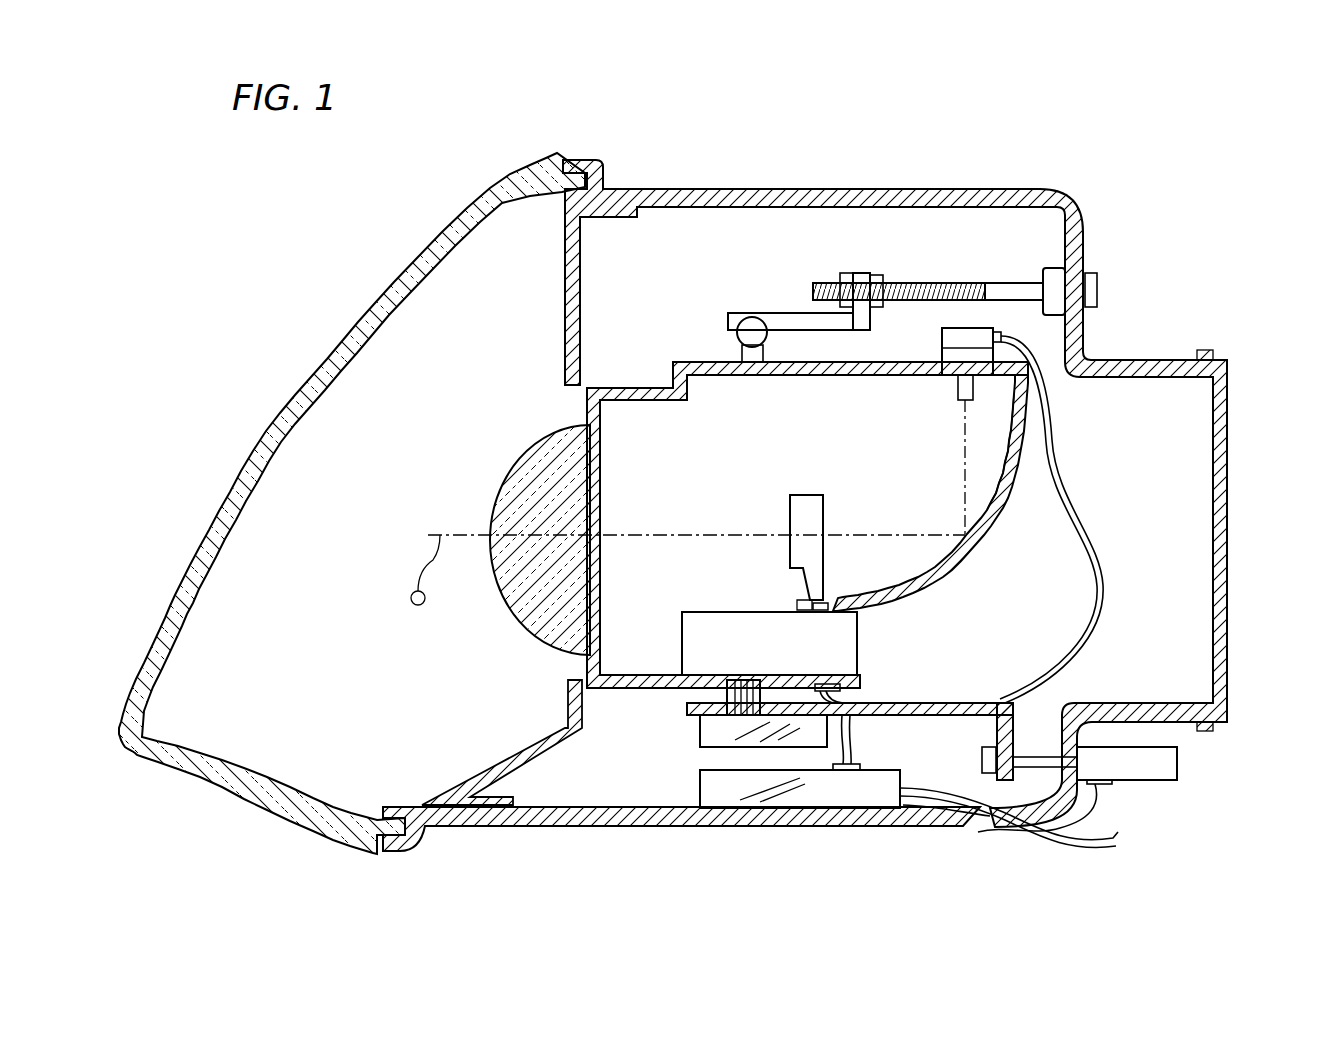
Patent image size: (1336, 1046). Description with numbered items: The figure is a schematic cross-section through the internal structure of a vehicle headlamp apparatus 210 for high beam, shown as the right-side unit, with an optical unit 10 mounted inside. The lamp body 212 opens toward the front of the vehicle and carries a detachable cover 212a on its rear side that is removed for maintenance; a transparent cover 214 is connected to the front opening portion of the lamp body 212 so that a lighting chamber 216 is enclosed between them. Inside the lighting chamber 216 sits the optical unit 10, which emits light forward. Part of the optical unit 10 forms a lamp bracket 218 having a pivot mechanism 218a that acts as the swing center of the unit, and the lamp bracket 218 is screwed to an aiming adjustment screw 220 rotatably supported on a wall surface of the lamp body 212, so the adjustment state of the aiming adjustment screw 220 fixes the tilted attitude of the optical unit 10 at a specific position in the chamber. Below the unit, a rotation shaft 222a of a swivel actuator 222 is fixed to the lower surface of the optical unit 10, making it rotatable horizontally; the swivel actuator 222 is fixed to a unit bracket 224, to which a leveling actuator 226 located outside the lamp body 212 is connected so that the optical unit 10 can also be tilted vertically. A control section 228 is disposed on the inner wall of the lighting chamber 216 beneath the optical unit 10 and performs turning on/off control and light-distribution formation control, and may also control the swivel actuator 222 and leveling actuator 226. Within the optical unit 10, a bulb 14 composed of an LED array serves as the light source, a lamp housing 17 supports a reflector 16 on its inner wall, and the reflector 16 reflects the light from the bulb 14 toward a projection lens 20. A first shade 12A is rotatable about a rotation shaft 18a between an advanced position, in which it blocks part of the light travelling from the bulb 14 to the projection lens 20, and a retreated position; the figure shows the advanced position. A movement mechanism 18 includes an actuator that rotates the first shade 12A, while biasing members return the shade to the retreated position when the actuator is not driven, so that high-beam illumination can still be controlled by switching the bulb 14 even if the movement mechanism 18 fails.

The vehicle headlamp apparatus 210 is at (956, 187).
The lamp body 212 is at (775, 193).
The detachable cover 212a is at (1015, 196).
The transparent cover 214 is at (410, 293).
The lighting chamber 216 is at (514, 338).
The lamp bracket 218 is at (774, 321).
The pivot mechanism 218a is at (722, 337).
The aiming adjustment screw 220 is at (1006, 292).
The optical unit 10 is at (640, 387).
The projection lens 20 is at (532, 453).
The first shade 12A is at (804, 506).
The bulb 14 is at (950, 380).
The reflector 16 is at (992, 492).
The lamp housing 17 is at (1008, 487).
The movement mechanism 18 is at (708, 626).
The rotation shaft 18a is at (819, 613).
The swivel actuator 222 is at (712, 735).
The rotation shaft 222a is at (720, 697).
The unit bracket 224 is at (890, 706).
The leveling actuator 226 is at (1183, 768).
The control section 228 is at (805, 801).